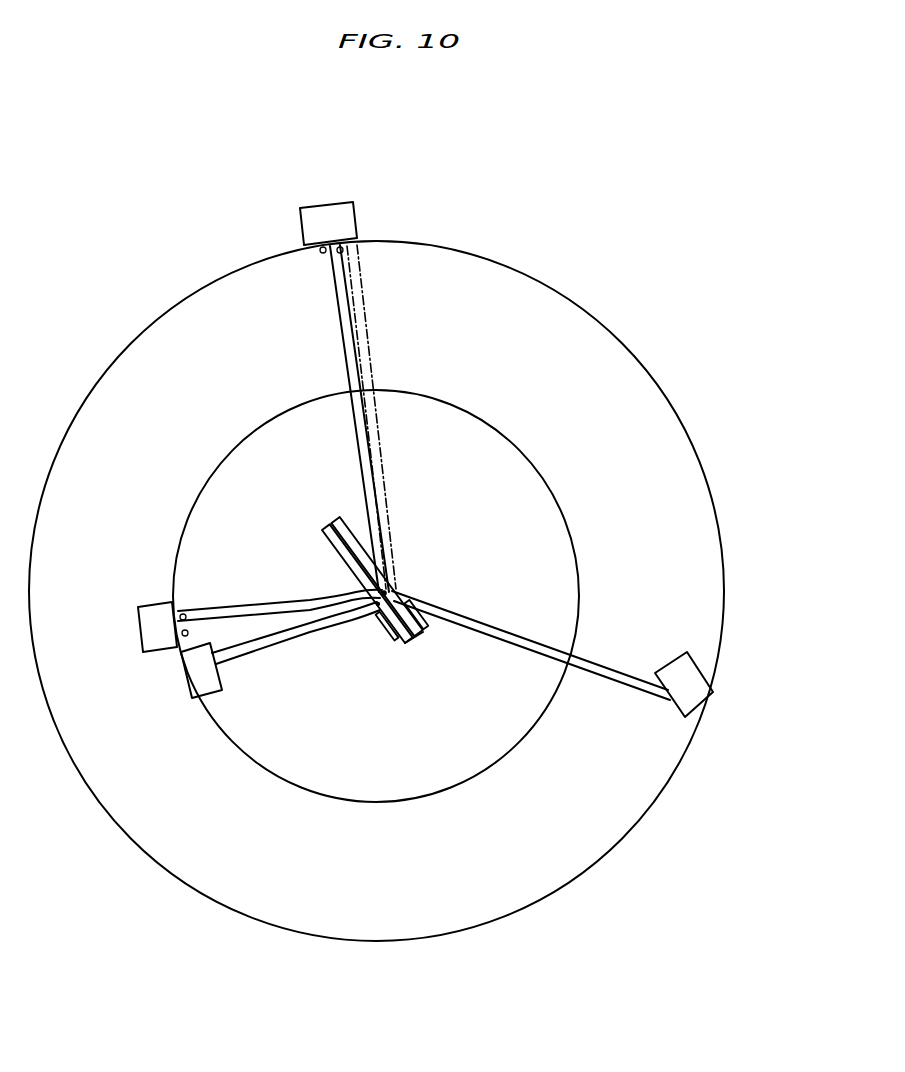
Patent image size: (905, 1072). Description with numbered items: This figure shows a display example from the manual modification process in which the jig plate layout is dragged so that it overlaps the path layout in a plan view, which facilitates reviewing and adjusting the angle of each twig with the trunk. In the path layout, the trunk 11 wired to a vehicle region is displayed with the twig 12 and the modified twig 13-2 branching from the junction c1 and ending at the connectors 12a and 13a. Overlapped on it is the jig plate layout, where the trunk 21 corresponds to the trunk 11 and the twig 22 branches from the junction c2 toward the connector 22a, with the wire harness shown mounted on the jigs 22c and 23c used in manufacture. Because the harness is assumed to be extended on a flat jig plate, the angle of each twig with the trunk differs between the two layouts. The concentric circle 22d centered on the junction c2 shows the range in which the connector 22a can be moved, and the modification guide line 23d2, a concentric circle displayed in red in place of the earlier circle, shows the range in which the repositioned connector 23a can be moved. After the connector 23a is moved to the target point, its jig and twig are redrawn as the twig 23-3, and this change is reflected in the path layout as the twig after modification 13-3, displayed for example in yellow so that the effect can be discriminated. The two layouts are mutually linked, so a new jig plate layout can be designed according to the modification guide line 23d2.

The modification guide line 23d2 is at (574, 297).
The concentric circle 22d is at (458, 407).
The connector 23a is at (325, 212).
The jig 23c is at (345, 250).
The twig 23-3 is at (336, 289).
The twig after modification 13-3 is at (364, 308).
The trunk 21 is at (403, 638).
The trunk 11 is at (417, 634).
The junction c1 is at (386, 592).
The junction c2 is at (378, 605).
The twig 22 is at (283, 606).
The connector 22a is at (143, 631).
The jig 22c is at (183, 616).
The twig 12 is at (257, 658).
The connector 12a is at (192, 670).
The twig 13-2 is at (608, 677).
The connector 13a is at (700, 692).